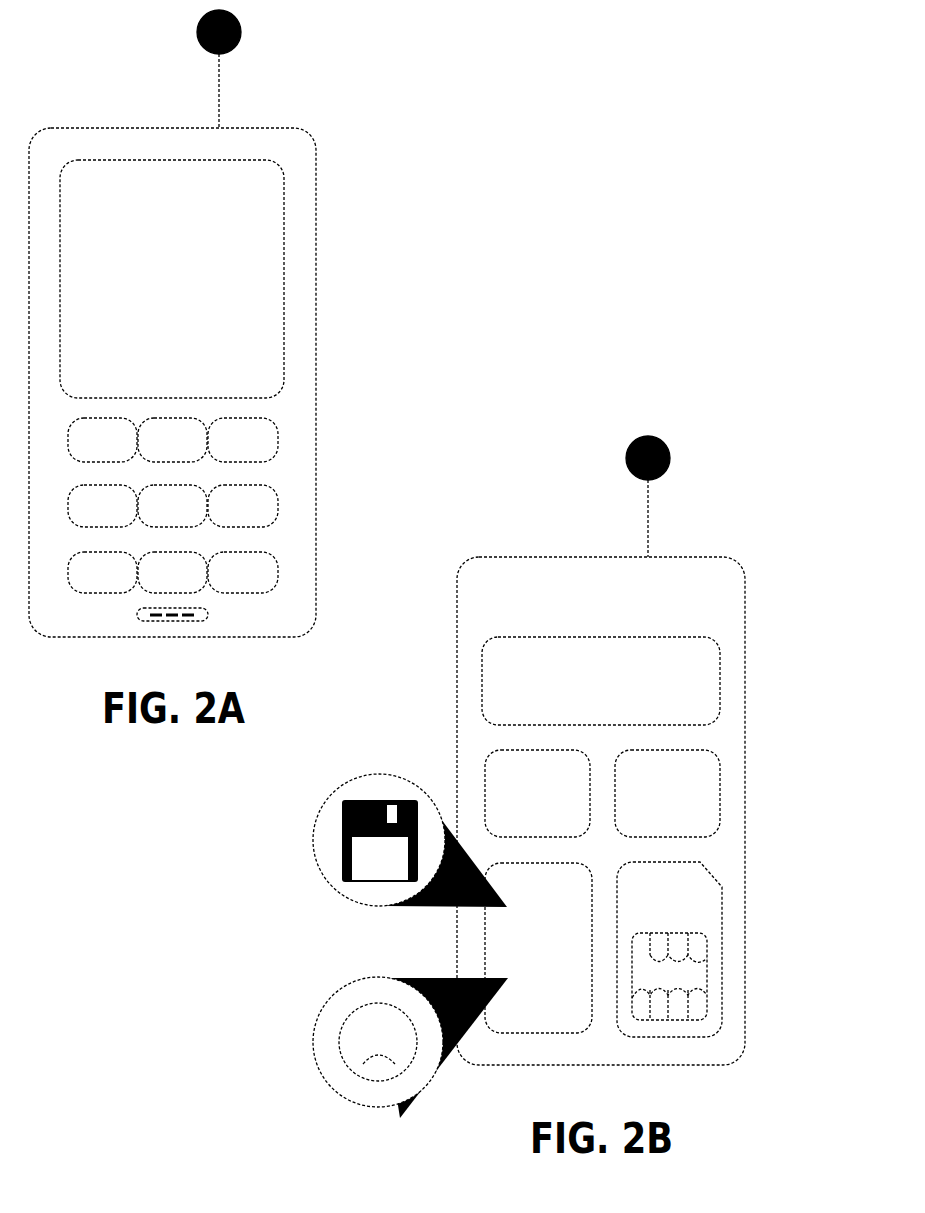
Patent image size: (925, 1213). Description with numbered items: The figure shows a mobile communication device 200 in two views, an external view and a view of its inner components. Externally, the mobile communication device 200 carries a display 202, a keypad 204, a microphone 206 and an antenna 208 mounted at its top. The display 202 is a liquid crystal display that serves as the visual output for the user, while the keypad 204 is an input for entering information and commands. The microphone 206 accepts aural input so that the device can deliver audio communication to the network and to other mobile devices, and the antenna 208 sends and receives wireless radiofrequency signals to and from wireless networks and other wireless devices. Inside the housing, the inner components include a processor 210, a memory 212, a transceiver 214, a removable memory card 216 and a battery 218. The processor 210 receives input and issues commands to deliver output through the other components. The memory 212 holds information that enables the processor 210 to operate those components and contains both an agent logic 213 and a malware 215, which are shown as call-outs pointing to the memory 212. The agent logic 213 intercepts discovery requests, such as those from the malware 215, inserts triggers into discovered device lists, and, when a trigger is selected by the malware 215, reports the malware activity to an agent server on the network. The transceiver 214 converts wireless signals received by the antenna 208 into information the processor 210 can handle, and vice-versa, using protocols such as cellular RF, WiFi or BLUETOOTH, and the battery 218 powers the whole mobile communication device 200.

In FIG. 2A, the mobile communication device 200 is at (157, 128).
In FIG. 2B, the mobile communication device 200 is at (602, 557).
In FIG. 2A, the display 202 is at (285, 240).
In FIG. 2A, the keypad 204 is at (278, 440).
In FIG. 2A, the microphone 206 is at (190, 622).
In FIG. 2A, the antenna 208 is at (233, 50).
In FIG. 2B, the antenna 208 is at (665, 476).
In FIG. 2B, the processor 210 is at (719, 775).
In FIG. 2B, the memory 212 is at (553, 1033).
In FIG. 2B, the agent logic 213 is at (342, 867).
In FIG. 2B, the transceiver 214 is at (485, 772).
In FIG. 2B, the malware 215 is at (363, 1082).
In FIG. 2B, the removable memory card 216 is at (722, 935).
In FIG. 2B, the battery 218 is at (720, 680).